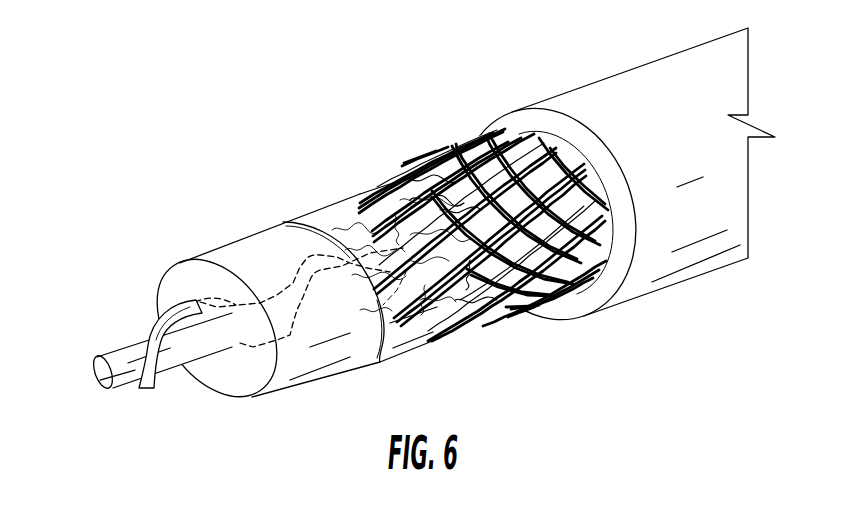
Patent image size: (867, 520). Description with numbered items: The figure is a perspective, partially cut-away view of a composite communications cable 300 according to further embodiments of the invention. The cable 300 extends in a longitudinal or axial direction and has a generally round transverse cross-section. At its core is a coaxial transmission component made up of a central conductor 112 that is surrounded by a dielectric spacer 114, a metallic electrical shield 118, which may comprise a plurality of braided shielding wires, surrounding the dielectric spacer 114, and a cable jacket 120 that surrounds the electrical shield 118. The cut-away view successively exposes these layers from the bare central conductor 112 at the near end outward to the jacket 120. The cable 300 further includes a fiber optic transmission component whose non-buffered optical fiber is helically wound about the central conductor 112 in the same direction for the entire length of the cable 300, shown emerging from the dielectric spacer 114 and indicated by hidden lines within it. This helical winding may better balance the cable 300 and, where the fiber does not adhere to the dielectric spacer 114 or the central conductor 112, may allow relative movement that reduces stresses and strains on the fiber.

The composite communications cable 300 is at (186, 70).
The central conductor 112 is at (127, 383).
The dielectric spacer 114 is at (228, 262).
The electrical shield 118 is at (445, 143).
The cable jacket 120 is at (579, 88).